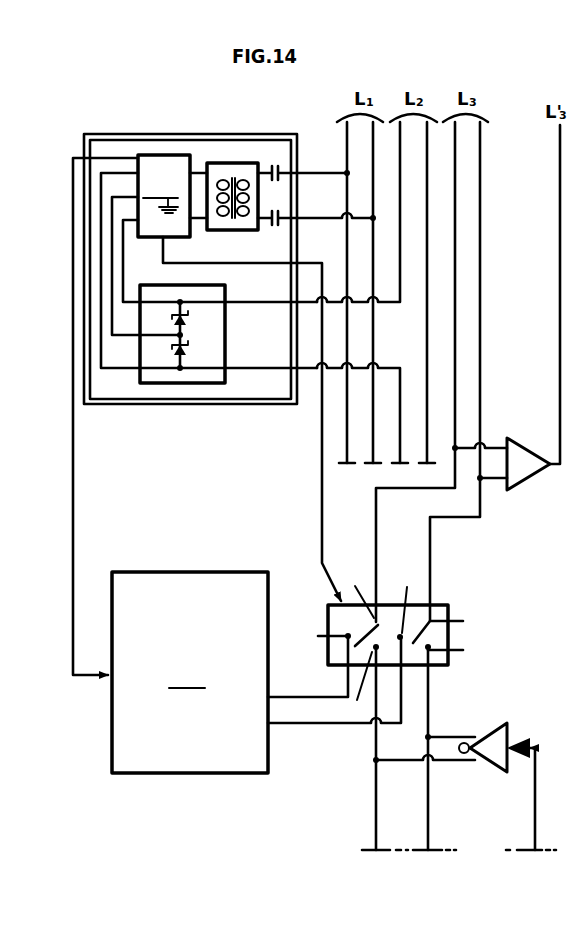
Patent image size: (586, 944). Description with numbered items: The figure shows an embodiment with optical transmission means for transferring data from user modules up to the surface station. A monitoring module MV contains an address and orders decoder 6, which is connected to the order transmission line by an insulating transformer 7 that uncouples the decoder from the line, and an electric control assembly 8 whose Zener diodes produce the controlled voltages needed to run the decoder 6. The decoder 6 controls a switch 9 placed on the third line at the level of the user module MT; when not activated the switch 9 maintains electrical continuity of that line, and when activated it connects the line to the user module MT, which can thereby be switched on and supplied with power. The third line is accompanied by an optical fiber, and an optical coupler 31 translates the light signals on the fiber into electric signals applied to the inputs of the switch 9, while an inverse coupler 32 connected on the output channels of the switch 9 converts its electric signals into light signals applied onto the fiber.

The address and orders decoder 6 is at (187, 155).
The insulating transformer 7 is at (241, 163).
The electric control assembly 8 is at (168, 384).
The switch 9 is at (446, 604).
The optical coupler 31 is at (498, 769).
The coupler 32 is at (523, 440).
The monitoring module MV is at (147, 136).
The user module MT is at (190, 672).